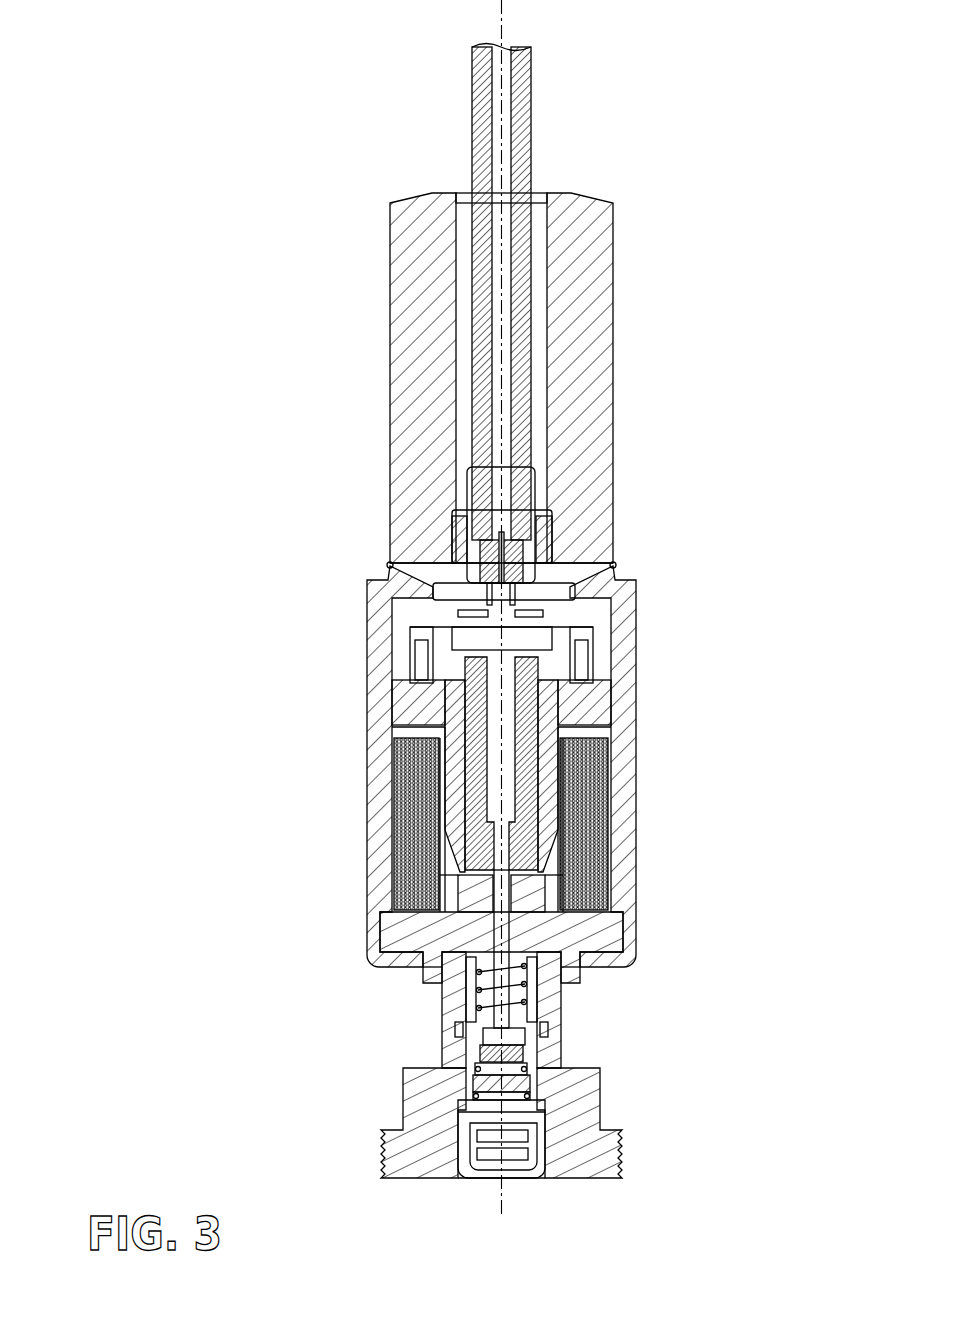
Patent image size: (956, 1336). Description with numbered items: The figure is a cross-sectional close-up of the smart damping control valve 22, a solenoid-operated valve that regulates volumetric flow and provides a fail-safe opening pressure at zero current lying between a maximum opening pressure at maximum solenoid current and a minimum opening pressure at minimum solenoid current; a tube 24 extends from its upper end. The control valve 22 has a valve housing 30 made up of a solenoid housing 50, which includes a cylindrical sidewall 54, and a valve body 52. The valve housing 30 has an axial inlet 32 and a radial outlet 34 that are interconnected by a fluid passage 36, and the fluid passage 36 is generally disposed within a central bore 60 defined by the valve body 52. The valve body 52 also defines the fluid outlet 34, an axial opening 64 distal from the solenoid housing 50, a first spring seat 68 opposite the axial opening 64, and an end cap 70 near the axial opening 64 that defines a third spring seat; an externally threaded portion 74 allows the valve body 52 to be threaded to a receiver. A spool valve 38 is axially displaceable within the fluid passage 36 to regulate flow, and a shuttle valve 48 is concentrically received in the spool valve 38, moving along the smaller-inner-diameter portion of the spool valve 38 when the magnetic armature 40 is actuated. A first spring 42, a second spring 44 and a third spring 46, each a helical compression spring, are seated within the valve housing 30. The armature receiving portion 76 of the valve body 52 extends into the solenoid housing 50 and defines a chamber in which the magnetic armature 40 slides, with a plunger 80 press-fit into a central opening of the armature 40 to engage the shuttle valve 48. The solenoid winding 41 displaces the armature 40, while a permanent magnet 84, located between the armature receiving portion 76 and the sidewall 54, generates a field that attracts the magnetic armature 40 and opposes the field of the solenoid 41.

The smart damping control valve 22 is at (256, 572).
The tube 24 is at (502, 193).
The valve housing 30 is at (657, 960).
The axial inlet 32 is at (490, 1170).
The radial outlet 34 is at (443, 1035).
The fluid passage 36 is at (513, 1148).
The spool valve 38 is at (563, 1013).
The magnetic armature 40 is at (550, 821).
The solenoid winding 41 is at (395, 810).
The first spring 42 is at (490, 972).
The second spring 44 is at (478, 1065).
The third spring 46 is at (522, 1112).
The shuttle valve 48 is at (480, 1022).
The solenoid housing 50 is at (627, 617).
The valve body 52 is at (403, 928).
The cylindrical sidewall 54 is at (378, 593).
The central bore 60 is at (533, 1083).
The axial opening 64 is at (544, 1184).
The first spring seat 68 is at (520, 945).
The end cap 70 is at (463, 1150).
The externally threaded portion 74 is at (382, 1136).
The armature receiving portion 76 is at (545, 750).
The plunger 80 is at (507, 973).
The permanent magnet 84 is at (610, 670).